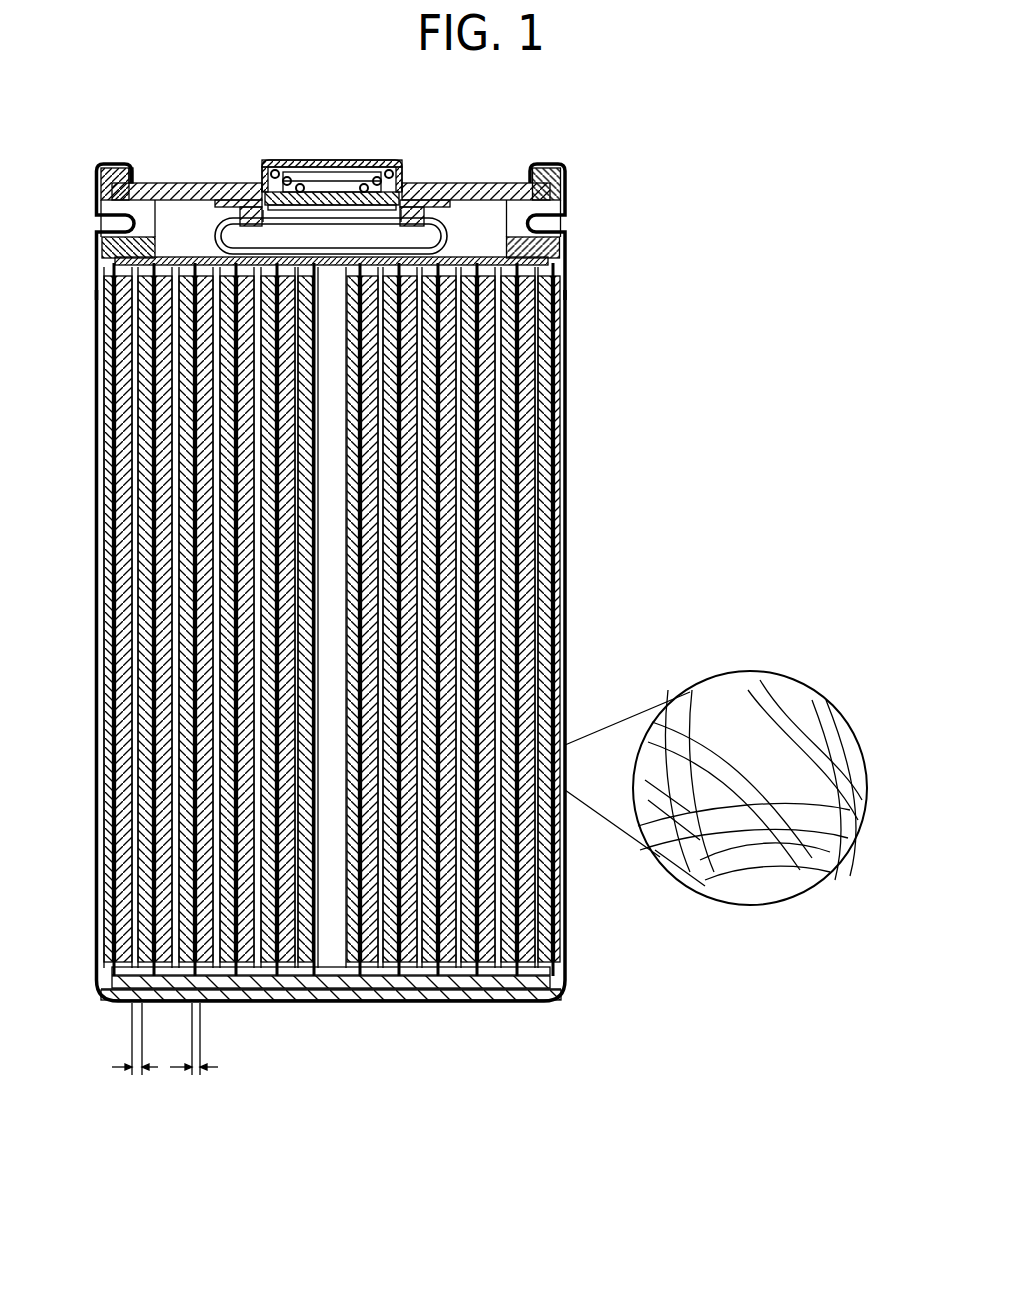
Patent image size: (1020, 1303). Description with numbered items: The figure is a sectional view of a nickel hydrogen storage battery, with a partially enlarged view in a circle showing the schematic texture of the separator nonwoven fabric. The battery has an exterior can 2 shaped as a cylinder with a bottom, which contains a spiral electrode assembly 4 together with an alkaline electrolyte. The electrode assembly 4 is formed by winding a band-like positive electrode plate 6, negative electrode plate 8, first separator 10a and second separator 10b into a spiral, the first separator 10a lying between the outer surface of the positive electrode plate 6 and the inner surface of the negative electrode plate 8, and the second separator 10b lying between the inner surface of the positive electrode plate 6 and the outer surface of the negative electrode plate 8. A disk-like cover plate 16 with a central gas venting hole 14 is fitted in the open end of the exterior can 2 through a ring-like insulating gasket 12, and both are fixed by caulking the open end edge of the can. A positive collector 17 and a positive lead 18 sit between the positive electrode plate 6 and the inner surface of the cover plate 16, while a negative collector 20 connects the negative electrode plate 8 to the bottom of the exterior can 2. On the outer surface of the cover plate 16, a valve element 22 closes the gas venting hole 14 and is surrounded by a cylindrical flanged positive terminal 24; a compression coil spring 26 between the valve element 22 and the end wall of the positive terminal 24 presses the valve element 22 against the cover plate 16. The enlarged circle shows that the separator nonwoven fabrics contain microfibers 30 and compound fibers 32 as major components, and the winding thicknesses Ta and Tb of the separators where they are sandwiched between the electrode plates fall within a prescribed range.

The exterior can 2 is at (567, 438).
The electrode assembly 4 is at (332, 707).
The positive electrode plate 6 is at (362, 967).
The negative electrode plate 8 is at (387, 967).
The first separator 10a is at (377, 965).
The second separator 10b is at (394, 976).
The insulating gasket 12 is at (366, 176).
The gas venting hole 14 is at (350, 196).
The cover plate 16 is at (468, 183).
The positive collector 17 is at (474, 252).
The positive lead 18 is at (238, 250).
The negative collector 20 is at (281, 985).
The valve element 22 is at (292, 176).
The positive terminal 24 is at (376, 163).
The compression coil spring 26 is at (316, 178).
The microfibers 30 is at (733, 734).
The compound fibers 32 is at (845, 827).
The winding thickness Ta is at (135, 1075).
The winding thickness Tb is at (196, 1075).